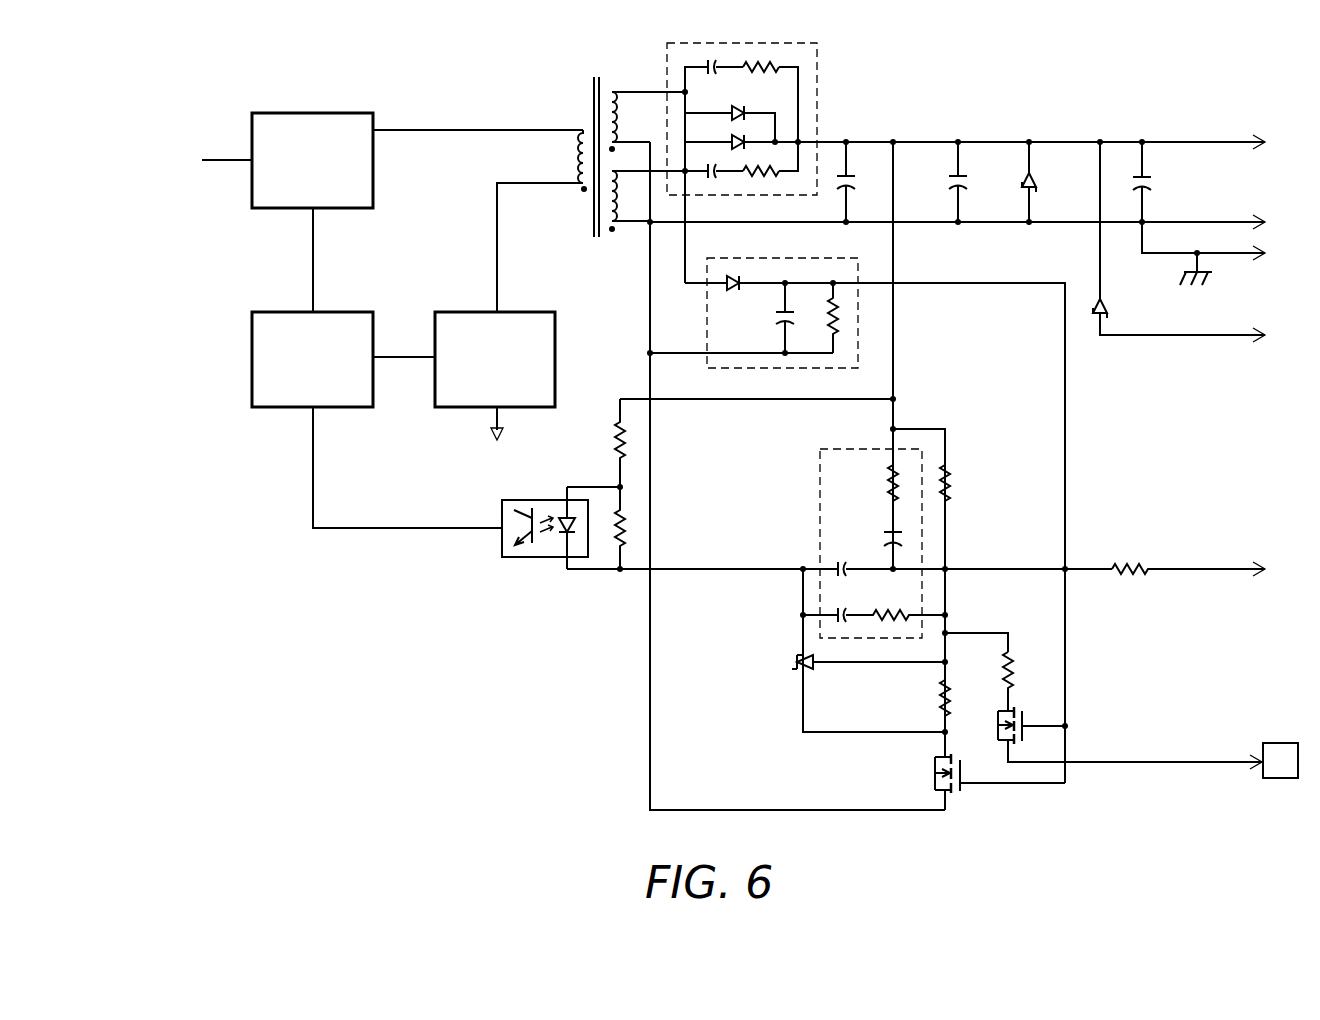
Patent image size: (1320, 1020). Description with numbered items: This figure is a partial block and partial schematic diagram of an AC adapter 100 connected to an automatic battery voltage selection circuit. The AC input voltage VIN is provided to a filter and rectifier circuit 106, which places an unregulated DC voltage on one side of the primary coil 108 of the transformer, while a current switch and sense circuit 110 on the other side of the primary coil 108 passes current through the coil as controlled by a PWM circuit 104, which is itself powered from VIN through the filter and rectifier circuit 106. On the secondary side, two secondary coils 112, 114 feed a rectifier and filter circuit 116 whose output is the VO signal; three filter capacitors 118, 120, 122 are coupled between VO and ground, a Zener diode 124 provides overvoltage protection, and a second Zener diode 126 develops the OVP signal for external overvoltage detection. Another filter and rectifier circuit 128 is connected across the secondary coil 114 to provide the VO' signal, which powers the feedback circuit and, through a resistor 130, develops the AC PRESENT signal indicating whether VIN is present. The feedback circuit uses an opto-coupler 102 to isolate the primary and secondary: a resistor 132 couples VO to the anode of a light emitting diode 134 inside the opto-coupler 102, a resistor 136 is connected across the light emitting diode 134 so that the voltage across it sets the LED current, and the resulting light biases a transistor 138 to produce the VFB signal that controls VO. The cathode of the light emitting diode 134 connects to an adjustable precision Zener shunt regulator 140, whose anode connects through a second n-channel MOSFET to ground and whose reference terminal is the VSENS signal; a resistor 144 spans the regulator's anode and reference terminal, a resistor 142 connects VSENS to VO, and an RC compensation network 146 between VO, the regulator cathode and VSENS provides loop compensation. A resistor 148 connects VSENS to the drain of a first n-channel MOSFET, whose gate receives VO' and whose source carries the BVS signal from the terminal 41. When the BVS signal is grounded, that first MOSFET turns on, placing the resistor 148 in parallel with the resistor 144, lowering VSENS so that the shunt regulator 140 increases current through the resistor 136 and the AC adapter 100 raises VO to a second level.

The AC adapter 100 is at (380, 56).
The opto-coupler 102 is at (545, 499).
The PWM circuit 104 is at (290, 312).
The filter and rectifier circuit 106 is at (277, 113).
The primary coil 108 is at (570, 130).
The current switch and sense circuit 110 is at (480, 312).
The secondary coil 112 is at (624, 90).
The secondary coil 114 is at (624, 232).
The rectifier and filter circuit 116 is at (785, 43).
The filter capacitor 118 is at (848, 172).
The filter capacitor 120 is at (960, 172).
The filter capacitor 122 is at (1150, 182).
The Zener diode 124 is at (1033, 172).
The Zener diode 126 is at (1108, 304).
The filter and rectifier circuit 128 is at (775, 370).
The resistor 130 is at (1130, 576).
The resistor 132 is at (618, 440).
The light emitting diode 134 is at (567, 517).
The resistor 136 is at (612, 550).
The transistor 138 is at (526, 542).
The adjustable precision Zener shunt regulator 140 is at (795, 662).
The resistor 142 is at (950, 490).
The resistor 144 is at (940, 705).
The RC compensation network 146 is at (850, 448).
The resistor 148 is at (1018, 668).
The terminal 41 is at (1285, 743).